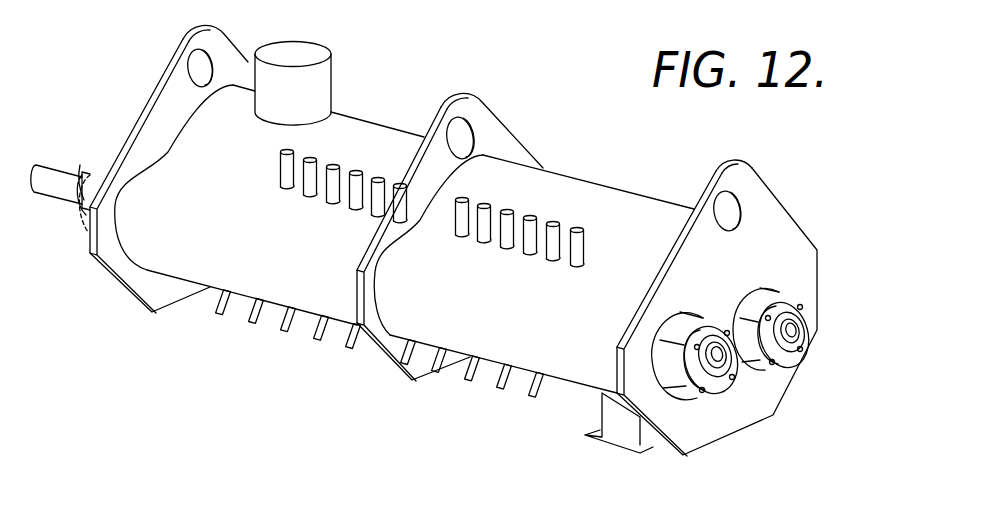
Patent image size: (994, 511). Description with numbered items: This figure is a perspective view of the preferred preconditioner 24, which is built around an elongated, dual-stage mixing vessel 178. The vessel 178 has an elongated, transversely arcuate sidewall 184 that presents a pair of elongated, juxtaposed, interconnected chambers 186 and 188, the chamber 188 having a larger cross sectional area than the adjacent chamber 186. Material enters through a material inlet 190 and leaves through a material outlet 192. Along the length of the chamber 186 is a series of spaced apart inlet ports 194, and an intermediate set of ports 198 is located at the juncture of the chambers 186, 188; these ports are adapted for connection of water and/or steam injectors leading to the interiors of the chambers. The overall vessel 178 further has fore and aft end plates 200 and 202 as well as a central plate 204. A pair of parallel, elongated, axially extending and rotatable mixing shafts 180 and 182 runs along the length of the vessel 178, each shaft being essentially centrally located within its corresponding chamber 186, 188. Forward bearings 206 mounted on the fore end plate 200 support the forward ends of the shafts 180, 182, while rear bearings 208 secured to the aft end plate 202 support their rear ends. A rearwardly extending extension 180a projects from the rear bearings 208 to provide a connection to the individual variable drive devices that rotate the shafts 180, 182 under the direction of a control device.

The preconditioner 24 is at (536, 84).
The mixing vessel 178 is at (611, 176).
The mixing shaft 180 is at (709, 372).
The extension 180a is at (52, 187).
The mixing shaft 182 is at (800, 340).
The sidewall 184 is at (363, 123).
The chamber 186 is at (197, 263).
The chamber 188 is at (648, 205).
The material inlet 190 is at (297, 52).
The material outlet 192 is at (620, 428).
The inlet ports 194 is at (325, 338).
The intermediate set of ports 198 is at (507, 213).
The fore end plate 200 is at (778, 237).
The aft end plate 202 is at (173, 55).
The central plate 204 is at (470, 107).
The forward bearings 206 is at (735, 308).
The rear bearings 208 is at (103, 160).